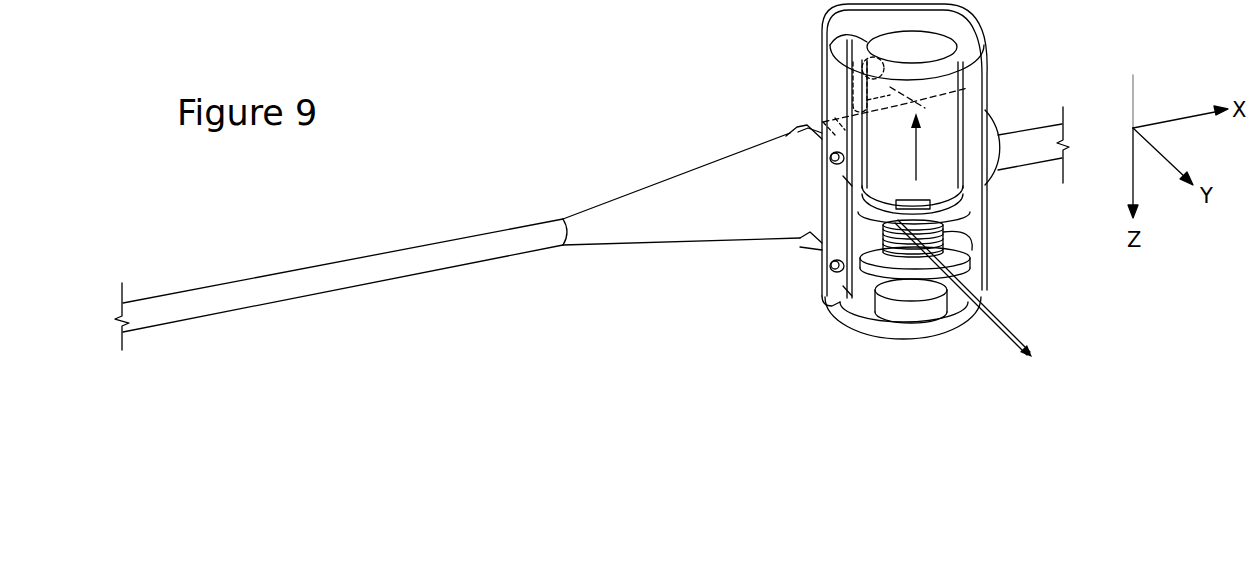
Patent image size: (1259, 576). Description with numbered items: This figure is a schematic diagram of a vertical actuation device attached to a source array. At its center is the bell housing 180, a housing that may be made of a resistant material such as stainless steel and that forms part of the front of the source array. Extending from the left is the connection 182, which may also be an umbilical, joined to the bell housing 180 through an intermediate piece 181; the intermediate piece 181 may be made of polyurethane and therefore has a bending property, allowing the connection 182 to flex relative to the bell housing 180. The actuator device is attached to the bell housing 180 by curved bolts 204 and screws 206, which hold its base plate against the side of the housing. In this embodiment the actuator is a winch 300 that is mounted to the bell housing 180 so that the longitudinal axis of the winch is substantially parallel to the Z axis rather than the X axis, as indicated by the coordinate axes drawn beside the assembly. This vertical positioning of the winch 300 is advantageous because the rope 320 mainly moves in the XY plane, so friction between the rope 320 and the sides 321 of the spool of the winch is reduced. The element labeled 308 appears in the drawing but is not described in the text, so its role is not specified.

The bell housing 180 is at (838, 60).
The screws 206 is at (836, 100).
The curved bolts 204 is at (800, 126).
The intermediate piece 181 is at (663, 207).
The connection 182 is at (371, 273).
The winch 300 is at (943, 132).
The sides of the spool 321 is at (953, 248).
The rope 320 is at (1002, 323).
The base 308 is at (910, 333).